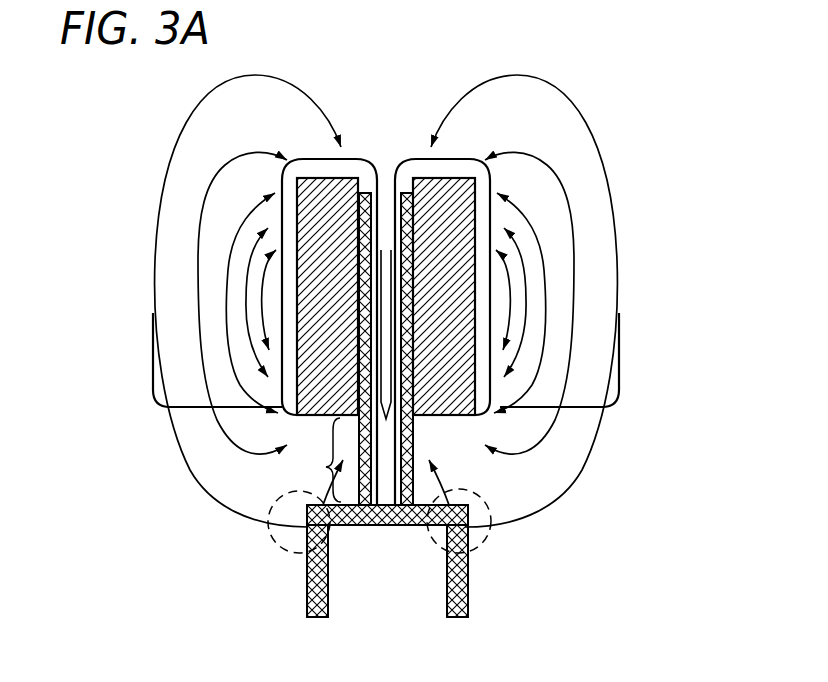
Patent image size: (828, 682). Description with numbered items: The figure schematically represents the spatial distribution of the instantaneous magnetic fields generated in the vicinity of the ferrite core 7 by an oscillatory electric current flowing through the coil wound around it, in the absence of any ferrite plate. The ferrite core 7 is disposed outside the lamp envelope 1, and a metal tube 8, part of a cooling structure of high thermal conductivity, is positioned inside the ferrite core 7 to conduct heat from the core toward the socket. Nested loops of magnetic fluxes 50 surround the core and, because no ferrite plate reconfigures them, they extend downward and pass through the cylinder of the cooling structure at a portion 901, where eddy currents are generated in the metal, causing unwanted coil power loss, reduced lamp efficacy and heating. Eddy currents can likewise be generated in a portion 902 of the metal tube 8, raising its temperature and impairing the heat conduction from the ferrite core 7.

The envelope 1 is at (621, 357).
The ferrite core 7 is at (432, 188).
The metal tube 8 is at (366, 192).
The magnetic fluxes 50 is at (604, 190).
The portion of cylinder 901 is at (300, 553).
The portion of metal tube 902 is at (308, 460).